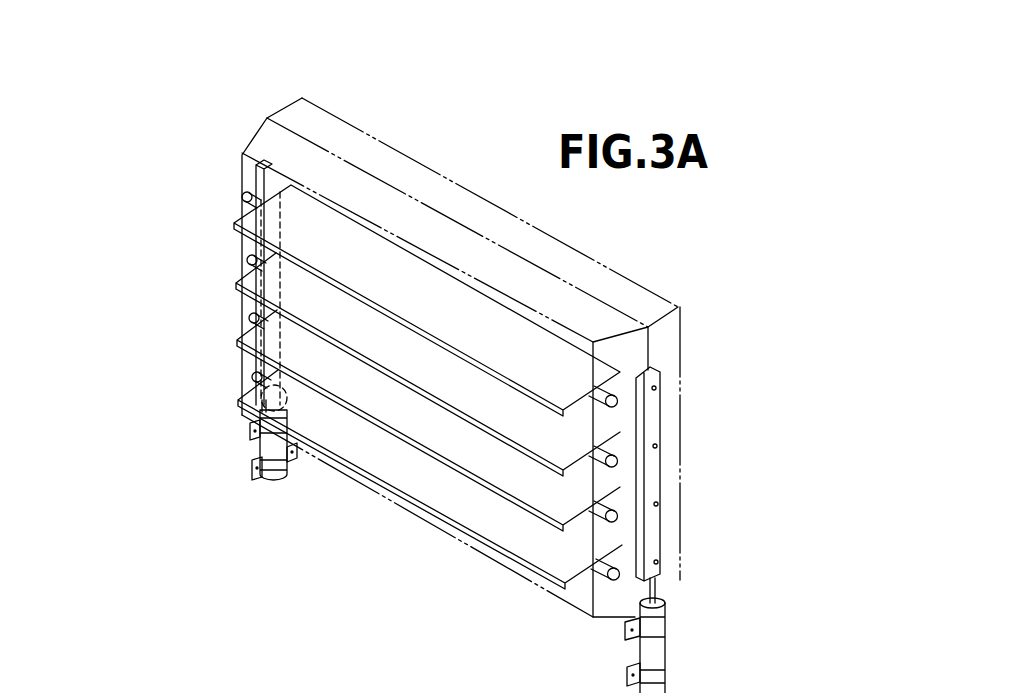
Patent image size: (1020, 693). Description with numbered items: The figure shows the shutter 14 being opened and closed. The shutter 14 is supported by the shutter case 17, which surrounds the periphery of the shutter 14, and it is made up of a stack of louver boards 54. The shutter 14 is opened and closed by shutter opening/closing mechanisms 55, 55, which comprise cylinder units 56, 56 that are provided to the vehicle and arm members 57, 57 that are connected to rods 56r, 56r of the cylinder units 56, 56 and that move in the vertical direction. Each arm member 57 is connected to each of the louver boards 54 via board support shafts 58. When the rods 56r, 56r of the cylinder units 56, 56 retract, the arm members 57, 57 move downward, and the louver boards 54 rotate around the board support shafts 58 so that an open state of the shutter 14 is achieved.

The shutter 14 is at (439, 417).
The shutter case 17 is at (300, 97).
The louver boards 54 is at (435, 482).
The shutter opening/closing mechanisms 55 is at (443, 426).
The cylinder units 56 is at (270, 480).
The rods 56r is at (250, 404).
The arm members 57 is at (257, 244).
The board support shafts 58 is at (243, 194).